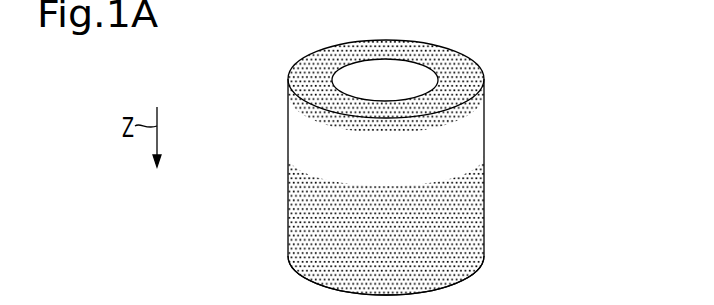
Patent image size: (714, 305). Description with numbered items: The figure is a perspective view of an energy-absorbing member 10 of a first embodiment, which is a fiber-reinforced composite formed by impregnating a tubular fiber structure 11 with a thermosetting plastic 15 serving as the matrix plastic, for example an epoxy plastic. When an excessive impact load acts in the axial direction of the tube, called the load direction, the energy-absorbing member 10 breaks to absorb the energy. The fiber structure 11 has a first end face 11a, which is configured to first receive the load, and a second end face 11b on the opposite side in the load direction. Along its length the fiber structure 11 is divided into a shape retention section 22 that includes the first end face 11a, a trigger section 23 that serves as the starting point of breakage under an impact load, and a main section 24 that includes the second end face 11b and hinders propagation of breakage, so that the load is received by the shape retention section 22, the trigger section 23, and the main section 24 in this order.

The energy-absorbing member 10 is at (394, 172).
The fiber structure 11 is at (381, 172).
The first end face 11a is at (290, 72).
The second end face 11b is at (452, 288).
The thermosetting plastic 15 is at (227, 80).
The shape retention section 22 is at (493, 80).
The trigger section 23 is at (493, 108).
The main section 24 is at (493, 158).